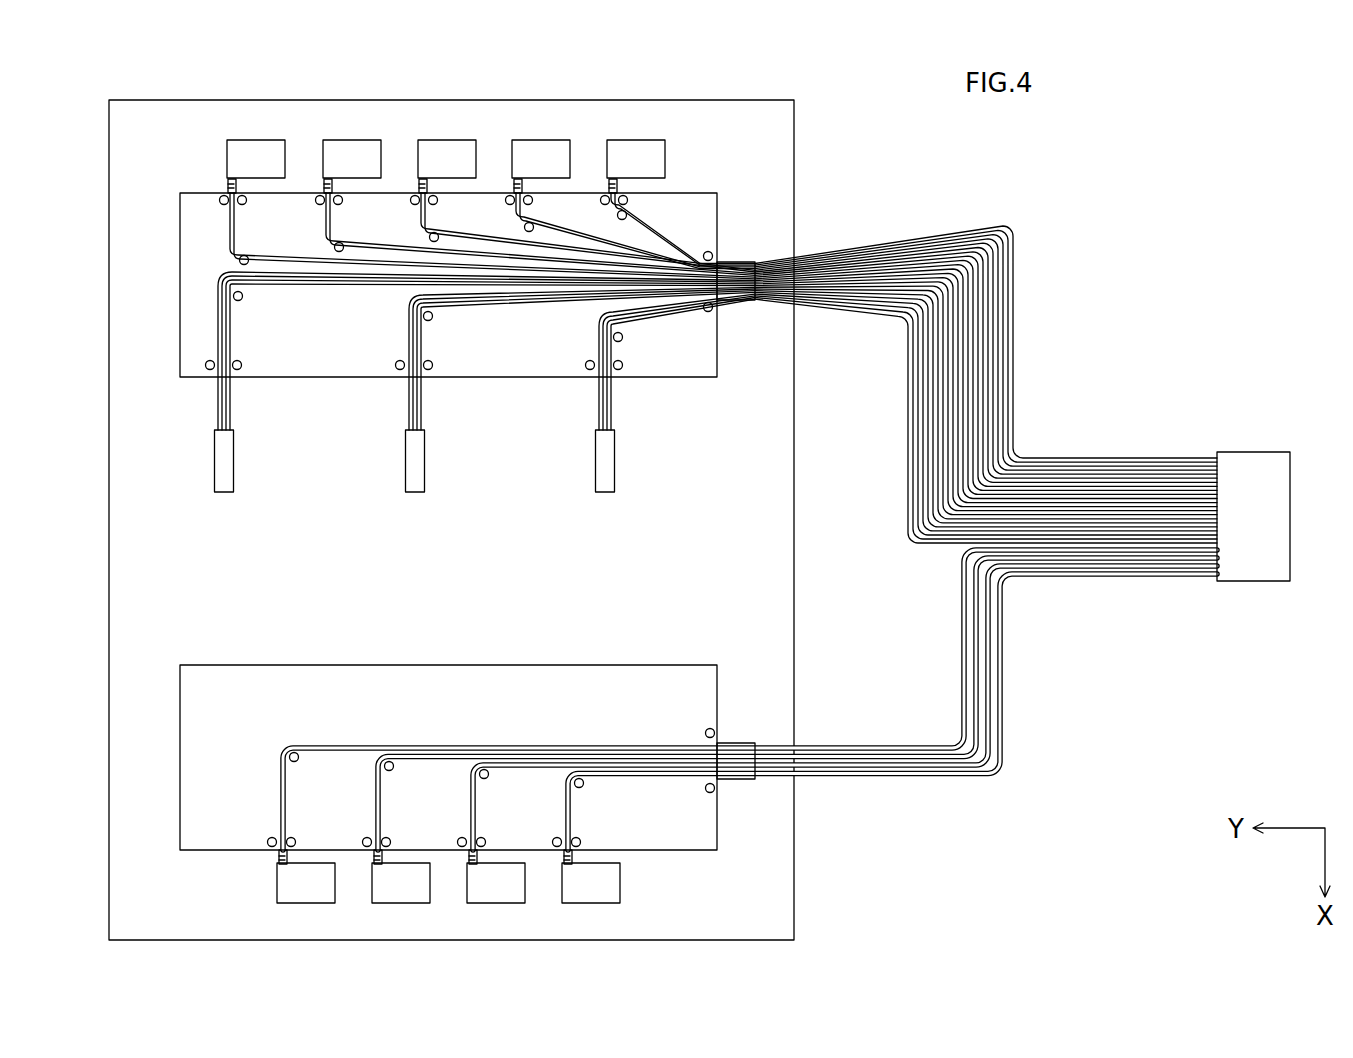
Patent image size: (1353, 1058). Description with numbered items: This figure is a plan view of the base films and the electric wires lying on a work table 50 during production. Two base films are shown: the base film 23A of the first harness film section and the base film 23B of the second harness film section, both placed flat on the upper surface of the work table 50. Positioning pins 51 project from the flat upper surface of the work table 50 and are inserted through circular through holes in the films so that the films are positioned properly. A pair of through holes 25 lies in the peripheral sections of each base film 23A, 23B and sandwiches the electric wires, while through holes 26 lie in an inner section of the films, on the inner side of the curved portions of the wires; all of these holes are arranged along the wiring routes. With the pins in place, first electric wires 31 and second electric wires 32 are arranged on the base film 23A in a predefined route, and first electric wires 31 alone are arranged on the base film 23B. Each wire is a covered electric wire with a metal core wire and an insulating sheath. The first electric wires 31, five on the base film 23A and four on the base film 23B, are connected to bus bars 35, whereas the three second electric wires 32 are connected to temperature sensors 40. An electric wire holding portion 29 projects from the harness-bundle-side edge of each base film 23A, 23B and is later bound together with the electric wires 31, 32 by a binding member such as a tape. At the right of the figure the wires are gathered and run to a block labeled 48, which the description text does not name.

The work table 50 is at (776, 100).
The base film 23A is at (703, 203).
The base film 23B is at (680, 670).
The bus bar 35 is at (262, 141).
The positioning pin 51 is at (220, 198).
The through hole 25 is at (240, 205).
The through hole 26 is at (628, 215).
The first electric wire 31 is at (236, 228).
The second electric wire 32 is at (228, 302).
The electric wire holding portion 29 is at (748, 305).
The temperature sensor 40 is at (233, 462).
The external connector 48 is at (1250, 470).